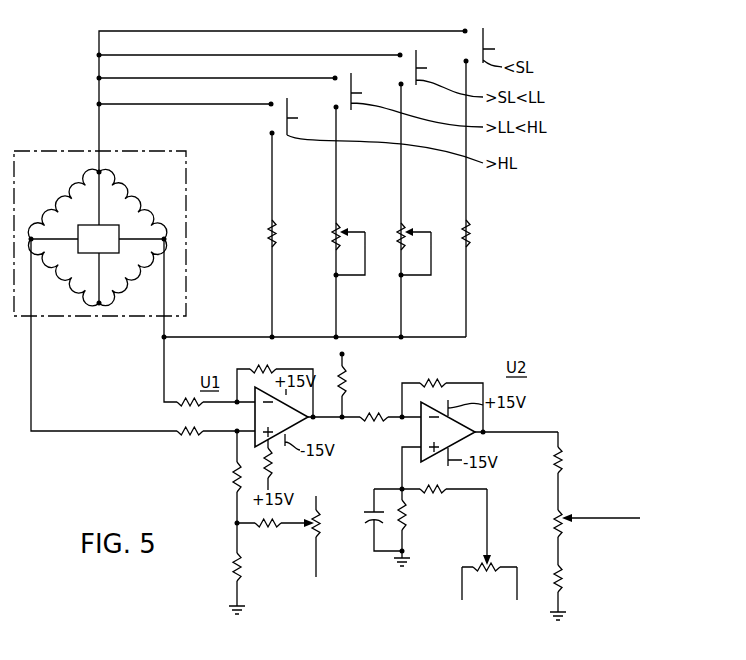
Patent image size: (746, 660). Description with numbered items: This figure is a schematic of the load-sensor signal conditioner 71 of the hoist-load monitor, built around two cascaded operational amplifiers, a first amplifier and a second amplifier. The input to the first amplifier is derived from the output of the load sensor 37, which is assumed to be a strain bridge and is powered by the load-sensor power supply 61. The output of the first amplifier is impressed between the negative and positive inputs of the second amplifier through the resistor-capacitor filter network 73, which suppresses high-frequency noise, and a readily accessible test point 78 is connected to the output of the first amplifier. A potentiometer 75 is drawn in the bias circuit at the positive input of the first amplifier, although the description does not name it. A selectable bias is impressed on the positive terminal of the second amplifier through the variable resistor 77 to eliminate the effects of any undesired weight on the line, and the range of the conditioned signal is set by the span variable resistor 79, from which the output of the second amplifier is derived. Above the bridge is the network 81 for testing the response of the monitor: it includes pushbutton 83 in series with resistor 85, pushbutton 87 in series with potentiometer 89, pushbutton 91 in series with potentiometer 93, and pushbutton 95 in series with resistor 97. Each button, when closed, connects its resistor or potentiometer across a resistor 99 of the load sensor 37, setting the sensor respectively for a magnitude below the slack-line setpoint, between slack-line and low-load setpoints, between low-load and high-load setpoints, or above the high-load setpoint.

The load sensor 37 is at (100, 219).
The load-sensor power supply 61 is at (83, 224).
The resistor of the load sensor 99 is at (134, 204).
The resistor 97 is at (276, 230).
The potentiometer 93 is at (340, 228).
The potentiometer 89 is at (405, 228).
The resistor 85 is at (470, 236).
The network 81 is at (372, 306).
The pushbutton 83 is at (489, 39).
The pushbutton 87 is at (419, 60).
The pushbutton 91 is at (354, 83).
The pushbutton 95 is at (290, 108).
The test point 78 is at (345, 354).
The load-sensor signal conditioner 71 is at (279, 619).
The offset potentiometer 75 is at (322, 524).
The resistor-capacitor filter network 73 is at (408, 510).
The variable resistor 77 is at (496, 563).
The span variable resistor 79 is at (562, 512).